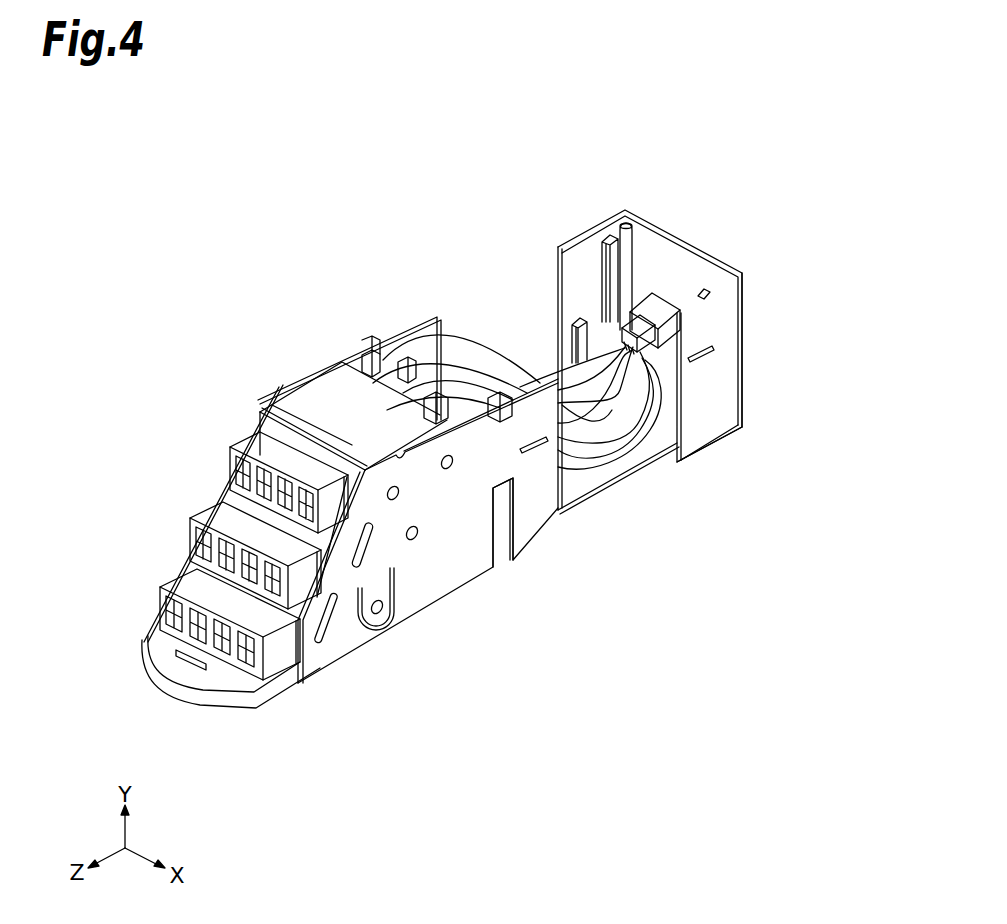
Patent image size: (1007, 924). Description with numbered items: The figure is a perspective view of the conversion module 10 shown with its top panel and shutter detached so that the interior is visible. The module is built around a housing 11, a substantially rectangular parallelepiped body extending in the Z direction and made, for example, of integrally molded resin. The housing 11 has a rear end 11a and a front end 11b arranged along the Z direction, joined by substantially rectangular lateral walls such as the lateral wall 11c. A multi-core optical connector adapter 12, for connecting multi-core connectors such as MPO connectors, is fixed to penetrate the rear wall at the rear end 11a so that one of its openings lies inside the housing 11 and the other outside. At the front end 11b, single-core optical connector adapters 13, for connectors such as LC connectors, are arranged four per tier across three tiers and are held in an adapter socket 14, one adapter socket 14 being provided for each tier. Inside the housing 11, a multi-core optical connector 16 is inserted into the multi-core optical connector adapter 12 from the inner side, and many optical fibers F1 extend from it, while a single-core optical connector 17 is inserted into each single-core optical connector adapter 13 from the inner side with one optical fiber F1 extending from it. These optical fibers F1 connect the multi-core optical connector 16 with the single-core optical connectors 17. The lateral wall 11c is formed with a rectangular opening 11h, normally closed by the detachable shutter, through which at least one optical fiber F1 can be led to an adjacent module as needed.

The conversion module 10 is at (692, 158).
The housing 11 is at (592, 218).
The rear end 11a is at (752, 366).
The front end 11b is at (135, 573).
The lateral wall 11c is at (702, 440).
The opening 11h is at (563, 512).
The multi-core optical connector adapter 12 is at (666, 296).
The single-core optical connector adapter 13 is at (232, 492).
The adapter socket 14 is at (318, 398).
The multi-core optical connector 16 is at (640, 316).
The single-core optical connector 17 is at (392, 362).
The optical fiber F1 is at (456, 360).